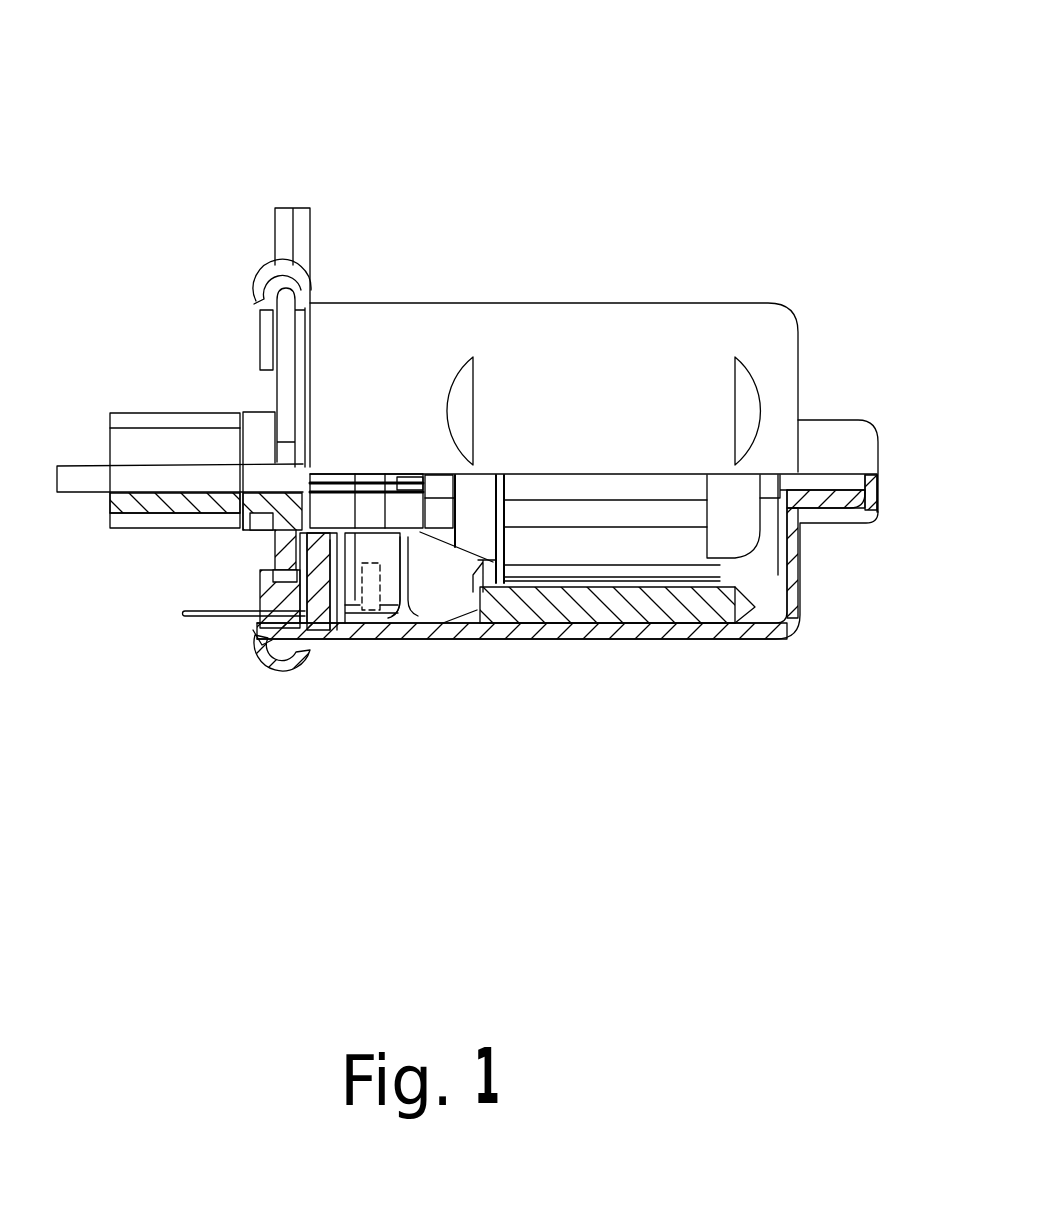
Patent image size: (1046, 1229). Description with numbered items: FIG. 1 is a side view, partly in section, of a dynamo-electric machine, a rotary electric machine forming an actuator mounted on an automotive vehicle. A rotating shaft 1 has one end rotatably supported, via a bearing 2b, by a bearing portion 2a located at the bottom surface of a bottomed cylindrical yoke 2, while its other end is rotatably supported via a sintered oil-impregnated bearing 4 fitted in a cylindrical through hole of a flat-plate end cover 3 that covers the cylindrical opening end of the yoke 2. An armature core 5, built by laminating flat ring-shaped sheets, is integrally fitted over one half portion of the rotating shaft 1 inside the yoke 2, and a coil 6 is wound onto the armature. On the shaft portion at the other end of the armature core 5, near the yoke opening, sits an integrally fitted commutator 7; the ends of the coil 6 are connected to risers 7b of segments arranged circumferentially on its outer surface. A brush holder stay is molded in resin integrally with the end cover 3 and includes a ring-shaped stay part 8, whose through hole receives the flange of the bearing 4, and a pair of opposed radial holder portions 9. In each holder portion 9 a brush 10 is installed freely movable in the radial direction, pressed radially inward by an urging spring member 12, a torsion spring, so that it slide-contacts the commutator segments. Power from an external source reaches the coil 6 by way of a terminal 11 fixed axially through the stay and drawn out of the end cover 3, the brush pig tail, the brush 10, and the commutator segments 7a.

The rotating shaft 1 is at (187, 477).
The yoke 2 is at (615, 367).
The bearing portion 2a is at (837, 437).
The bearing 2b is at (828, 498).
The end cover 3 is at (282, 392).
The sintered oil-impregnated bearing 4 is at (270, 497).
The armature core 5 is at (631, 550).
The coil 6 is at (433, 540).
The commutator 7 is at (335, 462).
The commutator segments 7a is at (370, 475).
The risers 7b is at (407, 475).
The stay part 8 is at (322, 590).
The holder portion 9 is at (350, 590).
The brush 10 is at (357, 470).
The terminal 11 is at (193, 620).
The urging spring member 12 is at (370, 620).